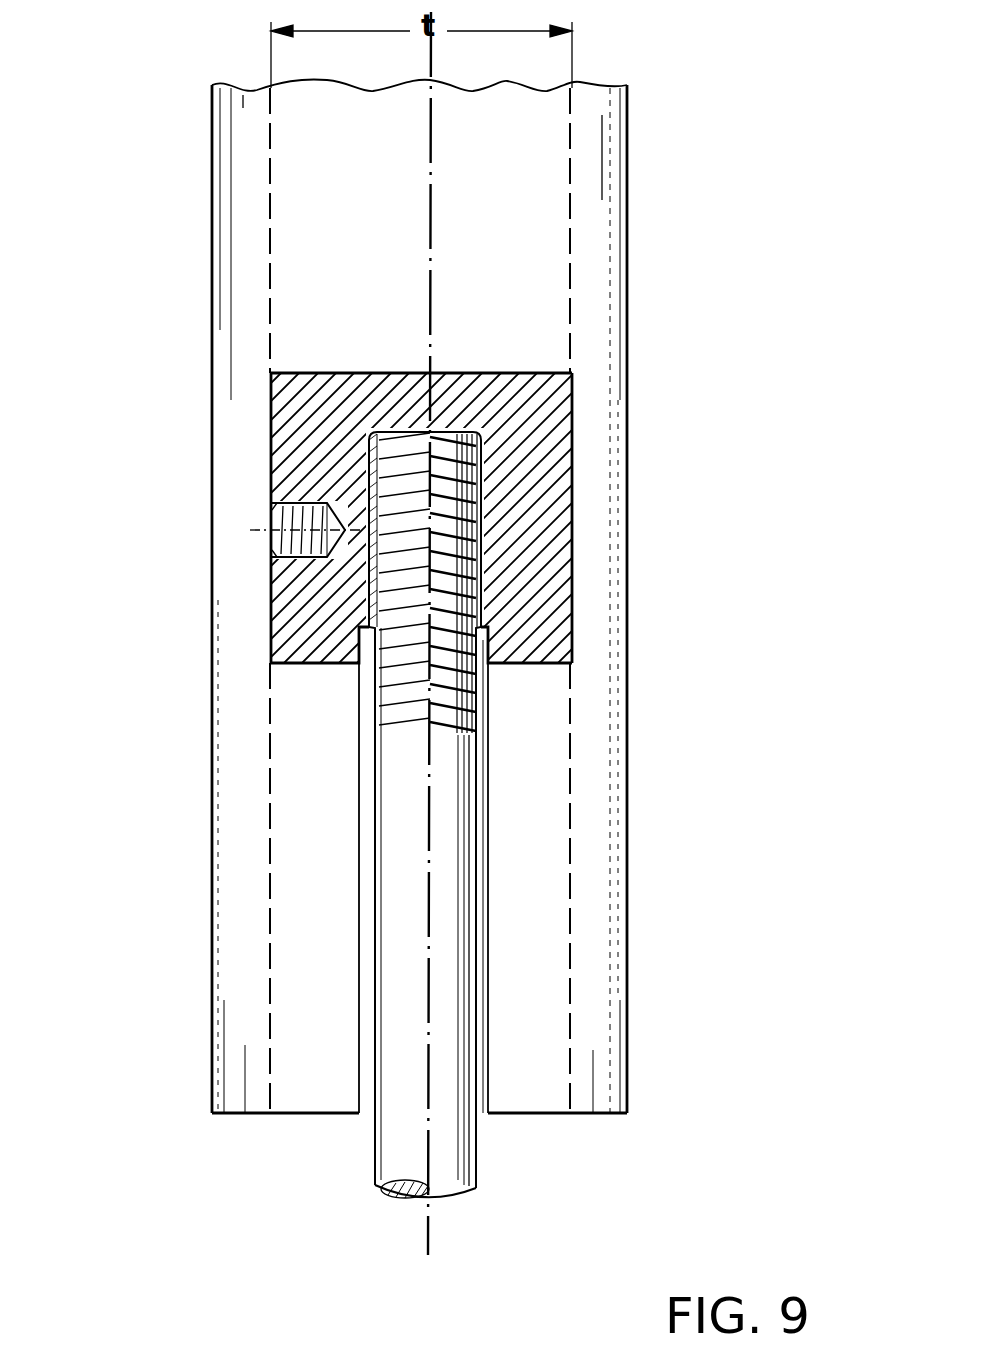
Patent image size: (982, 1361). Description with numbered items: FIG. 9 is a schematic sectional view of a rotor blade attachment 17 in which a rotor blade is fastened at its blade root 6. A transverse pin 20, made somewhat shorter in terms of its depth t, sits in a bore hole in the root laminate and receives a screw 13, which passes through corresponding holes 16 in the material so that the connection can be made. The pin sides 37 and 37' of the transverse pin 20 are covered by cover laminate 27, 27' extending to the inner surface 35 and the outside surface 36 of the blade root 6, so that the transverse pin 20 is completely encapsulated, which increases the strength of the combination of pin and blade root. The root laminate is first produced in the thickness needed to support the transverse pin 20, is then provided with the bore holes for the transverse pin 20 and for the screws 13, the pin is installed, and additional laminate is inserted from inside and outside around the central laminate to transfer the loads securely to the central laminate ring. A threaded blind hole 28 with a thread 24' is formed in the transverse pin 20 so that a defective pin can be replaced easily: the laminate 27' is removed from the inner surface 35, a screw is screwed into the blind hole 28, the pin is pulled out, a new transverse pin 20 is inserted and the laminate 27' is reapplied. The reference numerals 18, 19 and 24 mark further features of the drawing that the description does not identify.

The blade root 6 is at (650, 322).
The screw 13 is at (405, 1107).
The hole 16 is at (482, 922).
The rotor blade attachment 17 is at (689, 143).
The longitudinal axis 18 is at (428, 795).
The bottom plate 19 is at (553, 1115).
The transverse pin 20 is at (575, 410).
The threaded bore 24 is at (551, 583).
The thread 24' is at (218, 543).
The cover laminate 27 is at (660, 600).
The cover laminate 27' is at (174, 600).
The threaded blind hole 28 is at (270, 573).
The inner surface 35 is at (207, 752).
The outside surface 36 is at (630, 662).
The pin side 37 is at (681, 507).
The pin side 37' is at (159, 518).